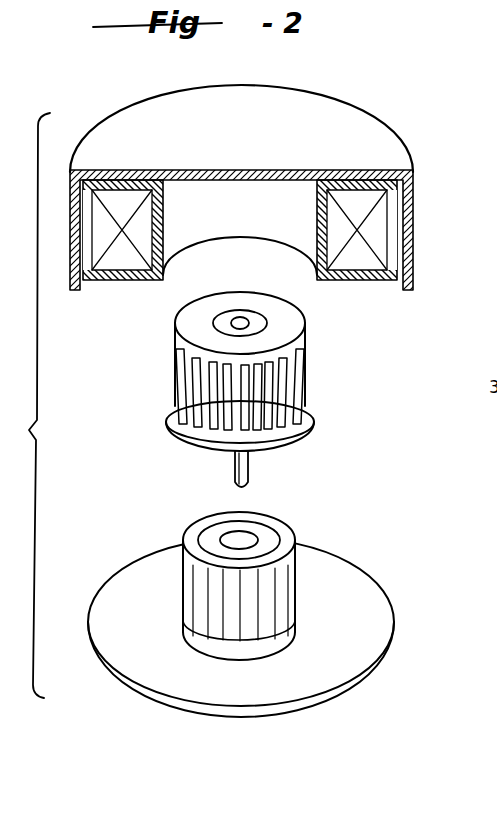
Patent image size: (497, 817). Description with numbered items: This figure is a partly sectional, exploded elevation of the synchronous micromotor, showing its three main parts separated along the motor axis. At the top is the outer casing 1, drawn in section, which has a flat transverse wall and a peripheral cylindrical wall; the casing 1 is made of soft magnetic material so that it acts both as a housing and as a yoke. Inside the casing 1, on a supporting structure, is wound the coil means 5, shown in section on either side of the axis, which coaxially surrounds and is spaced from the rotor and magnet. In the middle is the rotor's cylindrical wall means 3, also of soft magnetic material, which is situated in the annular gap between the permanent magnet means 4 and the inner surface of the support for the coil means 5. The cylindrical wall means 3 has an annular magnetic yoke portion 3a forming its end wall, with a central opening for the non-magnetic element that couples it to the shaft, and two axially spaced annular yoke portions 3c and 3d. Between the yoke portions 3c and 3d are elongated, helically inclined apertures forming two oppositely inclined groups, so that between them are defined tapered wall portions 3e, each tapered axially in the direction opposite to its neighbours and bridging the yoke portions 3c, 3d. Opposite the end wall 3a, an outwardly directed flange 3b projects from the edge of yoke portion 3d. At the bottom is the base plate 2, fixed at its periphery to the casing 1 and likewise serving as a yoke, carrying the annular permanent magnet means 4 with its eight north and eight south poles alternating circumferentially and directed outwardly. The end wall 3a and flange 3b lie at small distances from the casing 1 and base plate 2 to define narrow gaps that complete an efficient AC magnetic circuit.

The outer casing 1 is at (414, 204).
The base plate 2 is at (368, 586).
The cylindrical wall means 3 is at (281, 389).
The annular magnetic yoke portion 3a is at (291, 316).
The outwardly directed flange 3b is at (269, 443).
The annular yoke portion 3c is at (298, 347).
The annular yoke portion 3d is at (288, 430).
The tapered wall portions 3e is at (300, 392).
The permanent magnet means 4 is at (195, 538).
The coil means 5 is at (380, 240).